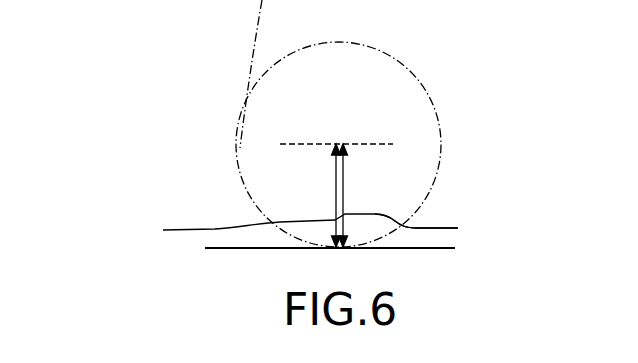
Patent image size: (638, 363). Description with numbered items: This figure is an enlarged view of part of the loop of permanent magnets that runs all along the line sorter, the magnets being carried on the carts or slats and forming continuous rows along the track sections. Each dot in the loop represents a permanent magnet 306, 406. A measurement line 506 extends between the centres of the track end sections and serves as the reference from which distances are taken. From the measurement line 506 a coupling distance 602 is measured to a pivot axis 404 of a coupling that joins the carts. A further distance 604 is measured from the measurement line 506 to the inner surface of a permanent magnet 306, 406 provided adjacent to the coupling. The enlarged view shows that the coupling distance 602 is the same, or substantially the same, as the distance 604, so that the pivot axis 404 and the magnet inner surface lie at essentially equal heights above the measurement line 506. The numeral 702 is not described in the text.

The permanent magnet 306 is at (300, 146).
The pivot axis 404 is at (293, 140).
The permanent magnet 406 is at (393, 142).
The coupling distance 602 is at (436, 228).
The distance 604 is at (289, 228).
The measurement line 506 is at (207, 248).
The sheet label 702 is at (585, 351).